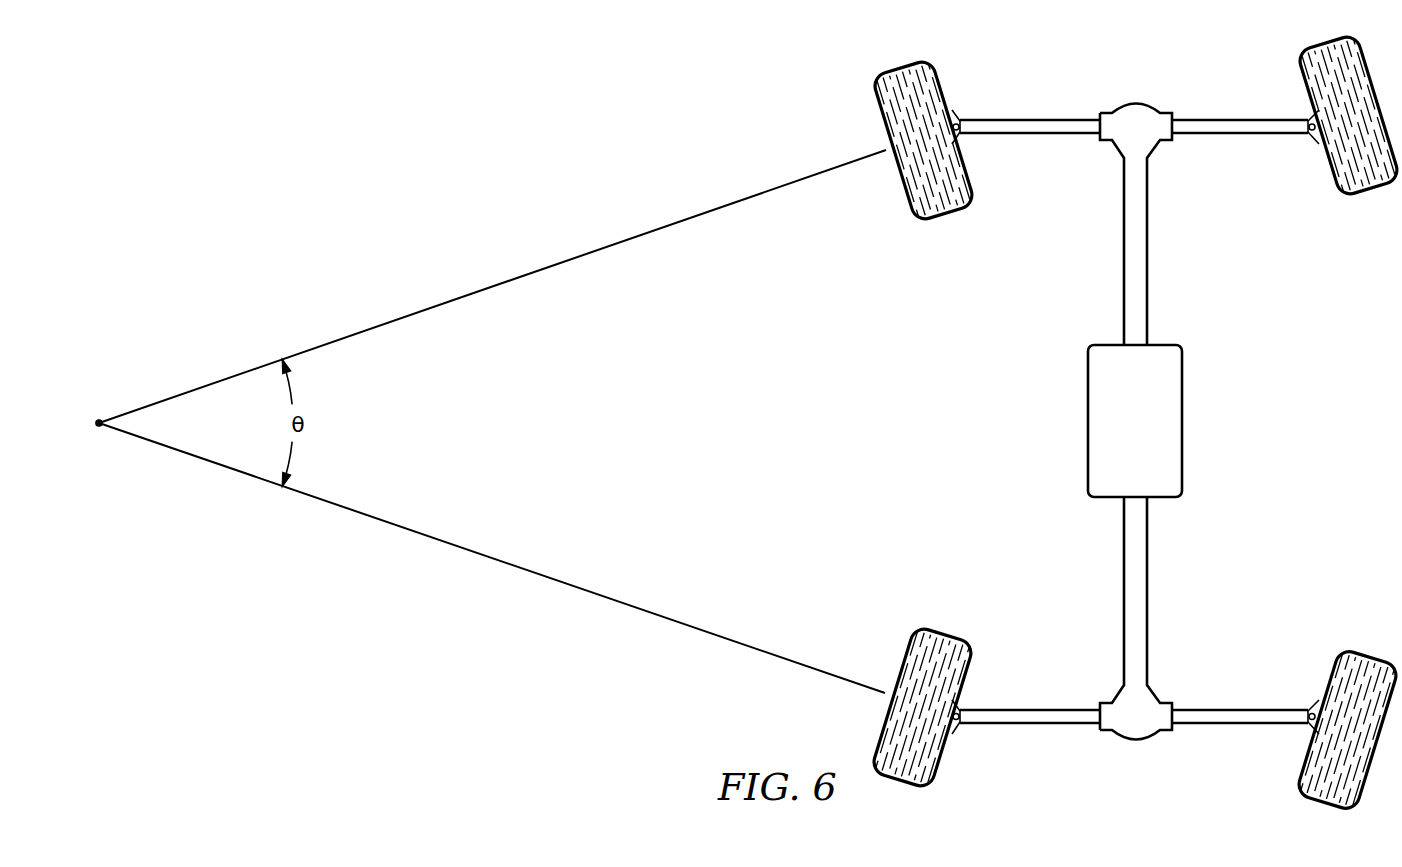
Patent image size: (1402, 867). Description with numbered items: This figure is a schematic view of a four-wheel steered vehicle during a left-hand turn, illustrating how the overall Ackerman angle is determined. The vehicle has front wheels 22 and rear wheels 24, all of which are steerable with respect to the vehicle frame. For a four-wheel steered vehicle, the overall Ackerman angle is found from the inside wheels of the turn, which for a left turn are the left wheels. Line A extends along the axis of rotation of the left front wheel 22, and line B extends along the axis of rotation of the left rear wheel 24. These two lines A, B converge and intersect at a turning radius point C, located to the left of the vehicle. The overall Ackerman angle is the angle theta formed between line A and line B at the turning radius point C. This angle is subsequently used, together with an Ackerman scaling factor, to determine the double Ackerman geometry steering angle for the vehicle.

The front wheels 22 is at (938, 85).
The rear wheels 24 is at (937, 768).
The line A is at (490, 284).
The line B is at (488, 560).
The turning radius point C is at (99, 430).